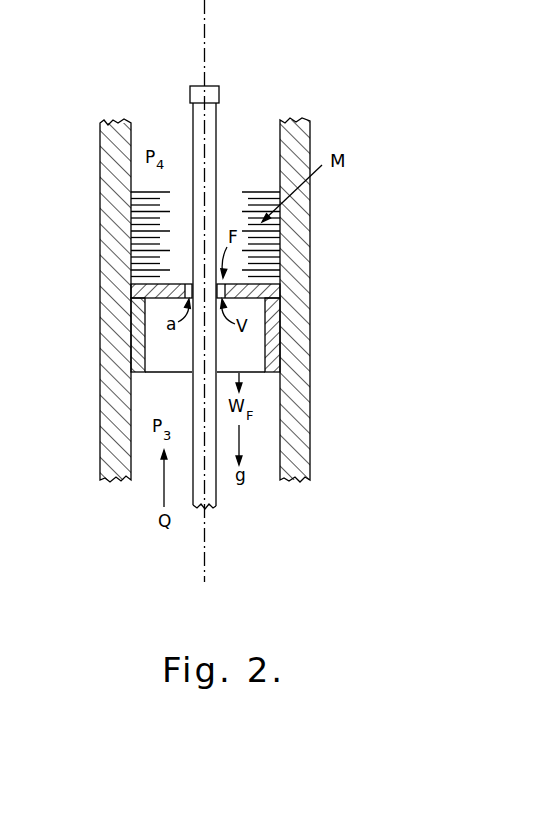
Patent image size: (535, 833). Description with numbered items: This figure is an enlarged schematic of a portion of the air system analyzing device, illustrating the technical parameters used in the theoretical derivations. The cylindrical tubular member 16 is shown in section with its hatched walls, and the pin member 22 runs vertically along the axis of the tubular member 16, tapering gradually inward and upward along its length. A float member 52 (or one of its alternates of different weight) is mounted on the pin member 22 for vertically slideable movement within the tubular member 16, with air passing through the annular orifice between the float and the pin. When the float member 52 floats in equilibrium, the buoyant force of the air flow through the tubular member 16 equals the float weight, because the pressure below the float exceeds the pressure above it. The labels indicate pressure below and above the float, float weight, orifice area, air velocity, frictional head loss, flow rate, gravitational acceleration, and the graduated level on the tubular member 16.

The tubular member 16 is at (100, 411).
The pin member 22 is at (210, 85).
The float member 52 is at (272, 374).